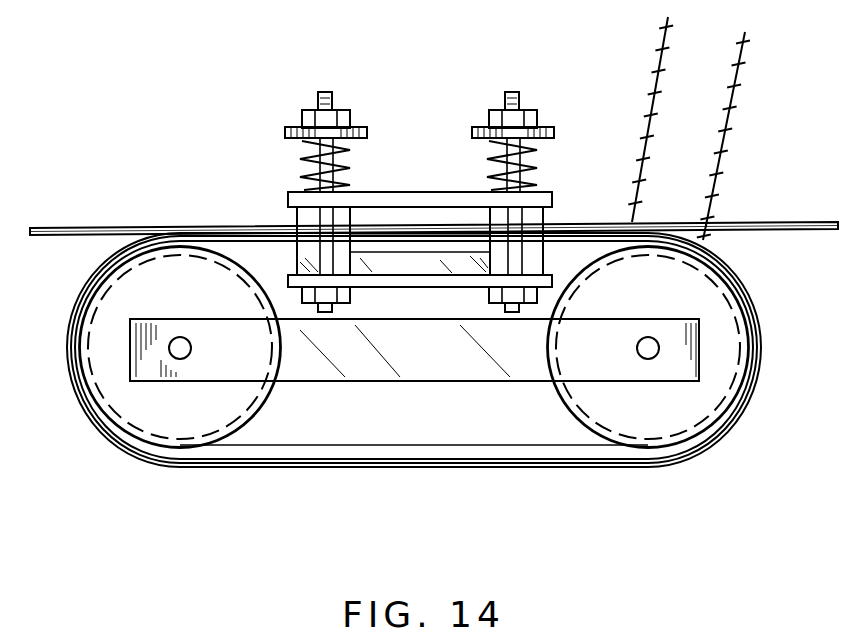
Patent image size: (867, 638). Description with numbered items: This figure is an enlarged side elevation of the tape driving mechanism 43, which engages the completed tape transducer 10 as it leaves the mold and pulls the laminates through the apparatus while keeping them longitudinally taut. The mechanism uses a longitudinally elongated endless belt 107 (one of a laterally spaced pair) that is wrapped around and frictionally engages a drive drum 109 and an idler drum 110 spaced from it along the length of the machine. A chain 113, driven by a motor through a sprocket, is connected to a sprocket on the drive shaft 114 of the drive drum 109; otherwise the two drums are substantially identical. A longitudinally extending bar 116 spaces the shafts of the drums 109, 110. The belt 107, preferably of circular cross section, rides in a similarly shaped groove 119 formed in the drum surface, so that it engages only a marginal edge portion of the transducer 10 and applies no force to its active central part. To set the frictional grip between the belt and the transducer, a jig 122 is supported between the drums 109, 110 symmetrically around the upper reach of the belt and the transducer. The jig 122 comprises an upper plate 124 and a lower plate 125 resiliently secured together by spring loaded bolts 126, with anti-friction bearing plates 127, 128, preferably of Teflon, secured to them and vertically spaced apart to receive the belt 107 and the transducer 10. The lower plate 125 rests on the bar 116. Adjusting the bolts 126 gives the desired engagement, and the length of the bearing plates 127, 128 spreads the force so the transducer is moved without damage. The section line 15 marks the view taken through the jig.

The tape transducer 10 is at (67, 227).
The section line 15- 15 is at (445, 183).
The tape driving mechanism 43 is at (186, 136).
The endless belt 107 is at (300, 458).
The drive drum 109 is at (683, 408).
The idler drum 110 is at (163, 415).
The chain 113 is at (728, 137).
The drive shaft 114 is at (649, 353).
The longitudinally extending bar 116 is at (492, 352).
The groove 119 is at (114, 418).
The jig 122 is at (565, 102).
The upper plate 124 is at (398, 202).
The lower plate 125 is at (445, 281).
The spring loaded bolt 126 is at (318, 102).
The upper bearing plate 127 is at (458, 219).
The lower bearing plate 128 is at (458, 263).